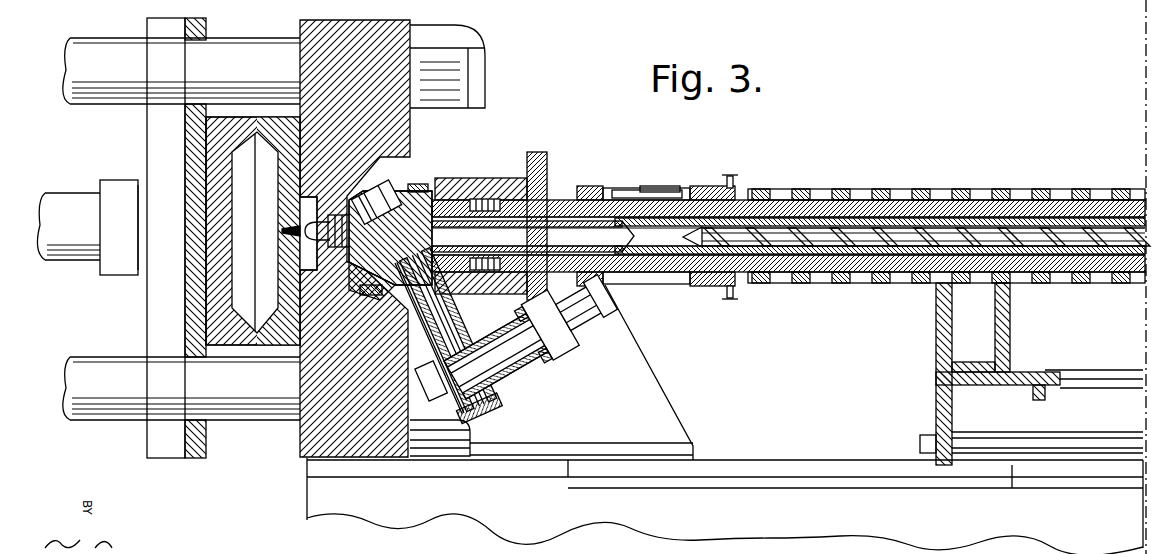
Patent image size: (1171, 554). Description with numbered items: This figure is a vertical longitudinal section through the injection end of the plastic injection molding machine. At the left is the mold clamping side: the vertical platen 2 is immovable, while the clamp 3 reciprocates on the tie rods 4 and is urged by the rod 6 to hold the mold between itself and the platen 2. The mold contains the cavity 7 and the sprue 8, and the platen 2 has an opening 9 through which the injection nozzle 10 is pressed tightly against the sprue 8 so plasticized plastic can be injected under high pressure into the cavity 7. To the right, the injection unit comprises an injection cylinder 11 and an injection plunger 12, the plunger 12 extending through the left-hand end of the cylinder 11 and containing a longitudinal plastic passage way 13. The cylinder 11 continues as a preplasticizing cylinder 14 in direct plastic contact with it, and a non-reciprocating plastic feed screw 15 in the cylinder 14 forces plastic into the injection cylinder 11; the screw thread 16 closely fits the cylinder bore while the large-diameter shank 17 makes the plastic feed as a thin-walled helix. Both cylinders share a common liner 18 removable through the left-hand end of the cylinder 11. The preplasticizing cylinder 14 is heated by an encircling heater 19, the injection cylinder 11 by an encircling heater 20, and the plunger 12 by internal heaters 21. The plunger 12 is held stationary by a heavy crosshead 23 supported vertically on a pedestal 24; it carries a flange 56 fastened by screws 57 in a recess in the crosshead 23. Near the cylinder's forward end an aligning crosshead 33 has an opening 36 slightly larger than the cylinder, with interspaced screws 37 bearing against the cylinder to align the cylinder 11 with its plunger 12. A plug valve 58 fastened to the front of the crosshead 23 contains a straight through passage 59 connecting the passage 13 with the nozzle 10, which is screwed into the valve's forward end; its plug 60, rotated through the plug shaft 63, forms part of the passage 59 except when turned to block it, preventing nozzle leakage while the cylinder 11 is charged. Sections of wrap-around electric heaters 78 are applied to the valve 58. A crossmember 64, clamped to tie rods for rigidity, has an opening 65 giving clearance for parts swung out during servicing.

The vertical platen 2 is at (378, 27).
The clamp 3 is at (153, 28).
The tie rods 4 is at (255, 43).
The rod 6 is at (73, 205).
The cavity 7 is at (420, 373).
The sprue 8 is at (283, 234).
The opening 9 is at (272, 186).
The injection nozzle 10 is at (300, 256).
The injection cylinder 11 is at (640, 196).
The injection plunger 12 is at (588, 212).
The plastic passage way 13 is at (574, 245).
The preplasticizing cylinder 14 is at (910, 206).
The plastic feed screw 15 is at (1046, 236).
The screw thread 16 is at (845, 232).
The shank 17 is at (906, 262).
The common liner 18 is at (826, 282).
The encircling heater 19 is at (1010, 196).
The encircling heater 20 is at (680, 190).
The internal heaters 21 is at (572, 258).
The crosshead 23 is at (533, 153).
The pedestal 24 is at (655, 386).
The aligning crosshead 33 is at (706, 188).
The opening 36 is at (705, 288).
The screws 37 is at (736, 299).
The flange 56 is at (490, 198).
The screws 57 is at (498, 266).
The plug valve 58 is at (414, 188).
The straight through passage 59 is at (372, 276).
The plug 60 is at (385, 195).
The plug shaft 63 is at (432, 333).
The crossmember 64 is at (935, 354).
The opening 65 is at (1008, 290).
The wrap-around electric heaters 78 is at (425, 190).